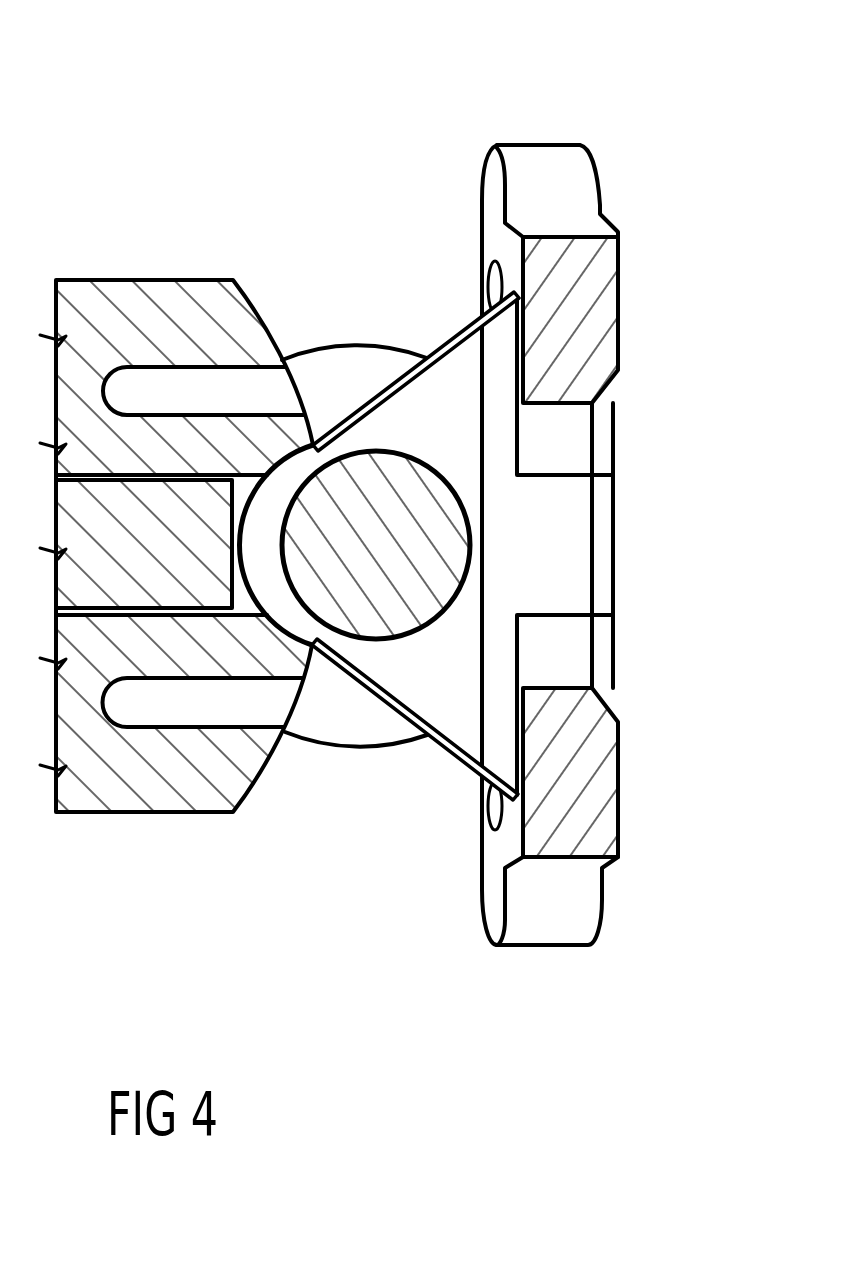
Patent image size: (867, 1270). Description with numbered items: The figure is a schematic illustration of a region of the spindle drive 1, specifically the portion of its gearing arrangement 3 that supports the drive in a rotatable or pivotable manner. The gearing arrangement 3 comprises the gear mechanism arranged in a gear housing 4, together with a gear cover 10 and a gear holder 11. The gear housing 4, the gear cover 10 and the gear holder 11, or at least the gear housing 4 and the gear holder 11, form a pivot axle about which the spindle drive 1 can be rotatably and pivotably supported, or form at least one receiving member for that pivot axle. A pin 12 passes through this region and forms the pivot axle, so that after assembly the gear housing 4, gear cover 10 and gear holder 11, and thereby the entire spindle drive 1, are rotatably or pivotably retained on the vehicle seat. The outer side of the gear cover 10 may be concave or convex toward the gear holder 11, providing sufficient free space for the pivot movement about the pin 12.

The spindle drive 1 is at (375, 472).
The gearing arrangement 3 is at (353, 302).
The gear housing 4 is at (298, 355).
The gear cover 10 is at (222, 708).
The gear holder 11 is at (583, 548).
The pin 12 is at (373, 615).